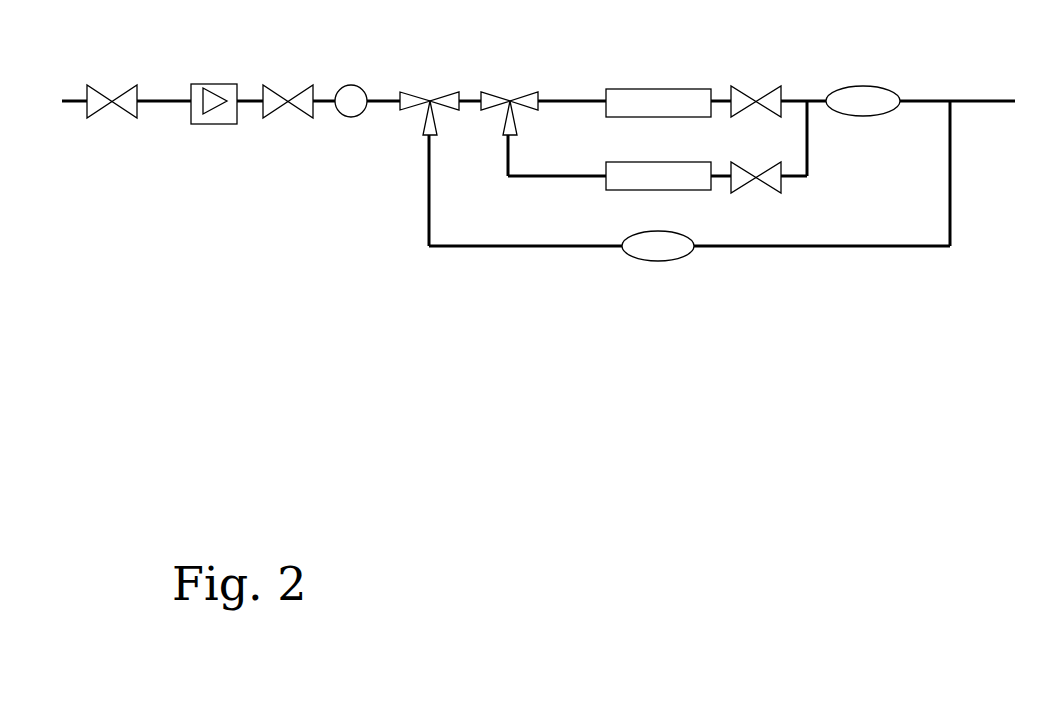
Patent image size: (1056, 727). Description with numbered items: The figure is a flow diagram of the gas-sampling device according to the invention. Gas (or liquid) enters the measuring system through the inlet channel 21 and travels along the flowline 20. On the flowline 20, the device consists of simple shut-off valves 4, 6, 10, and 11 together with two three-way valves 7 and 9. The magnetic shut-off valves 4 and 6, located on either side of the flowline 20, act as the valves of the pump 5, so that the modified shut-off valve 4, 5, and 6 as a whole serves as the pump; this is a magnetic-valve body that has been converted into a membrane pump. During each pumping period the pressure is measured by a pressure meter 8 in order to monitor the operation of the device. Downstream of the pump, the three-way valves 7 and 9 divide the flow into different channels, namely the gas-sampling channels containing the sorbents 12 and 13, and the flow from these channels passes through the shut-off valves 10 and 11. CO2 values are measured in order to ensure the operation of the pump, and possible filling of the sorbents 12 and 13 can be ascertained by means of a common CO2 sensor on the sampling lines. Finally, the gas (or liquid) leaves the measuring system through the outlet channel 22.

The shut-off valve 4 is at (131, 92).
The pump 5 is at (190, 95).
The shut-off valve 6 is at (305, 90).
The three-way valve 7 is at (408, 95).
The pressure meter 8 is at (360, 88).
The three-way valve 9 is at (518, 95).
The shut-off valve 10 is at (772, 95).
The shut-off valve 11 is at (760, 170).
The sorbent 12 is at (611, 90).
The sorbent 13 is at (630, 192).
The flowline 20 is at (160, 103).
The inlet channel 21 is at (82, 100).
The outlet channel 22 is at (985, 101).